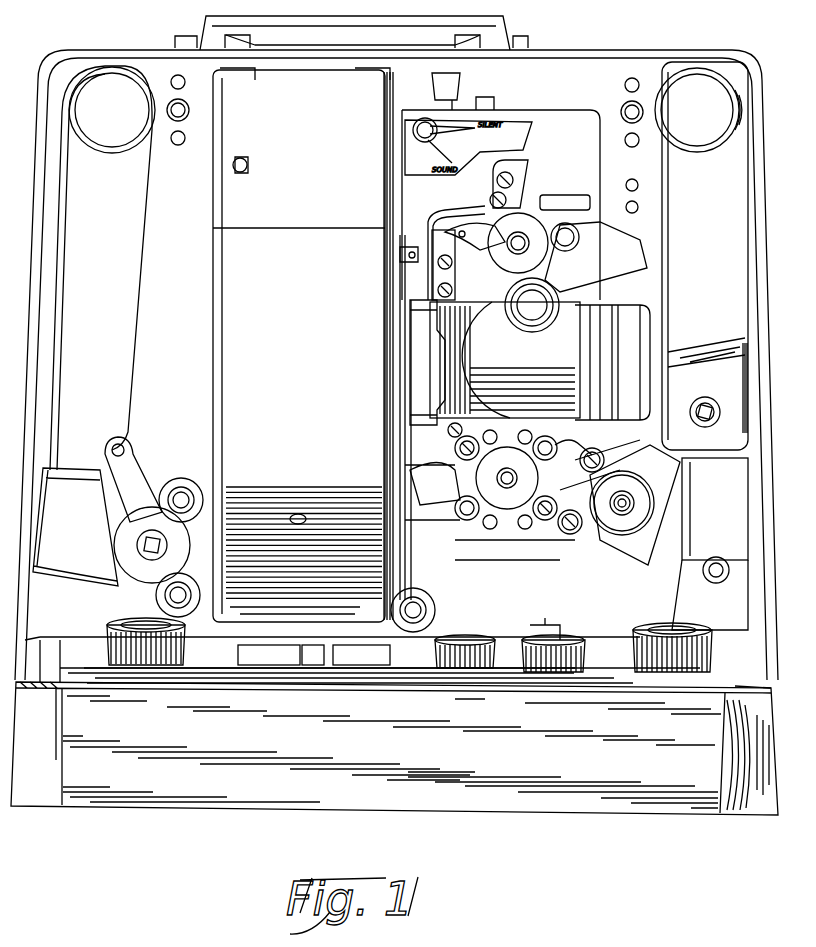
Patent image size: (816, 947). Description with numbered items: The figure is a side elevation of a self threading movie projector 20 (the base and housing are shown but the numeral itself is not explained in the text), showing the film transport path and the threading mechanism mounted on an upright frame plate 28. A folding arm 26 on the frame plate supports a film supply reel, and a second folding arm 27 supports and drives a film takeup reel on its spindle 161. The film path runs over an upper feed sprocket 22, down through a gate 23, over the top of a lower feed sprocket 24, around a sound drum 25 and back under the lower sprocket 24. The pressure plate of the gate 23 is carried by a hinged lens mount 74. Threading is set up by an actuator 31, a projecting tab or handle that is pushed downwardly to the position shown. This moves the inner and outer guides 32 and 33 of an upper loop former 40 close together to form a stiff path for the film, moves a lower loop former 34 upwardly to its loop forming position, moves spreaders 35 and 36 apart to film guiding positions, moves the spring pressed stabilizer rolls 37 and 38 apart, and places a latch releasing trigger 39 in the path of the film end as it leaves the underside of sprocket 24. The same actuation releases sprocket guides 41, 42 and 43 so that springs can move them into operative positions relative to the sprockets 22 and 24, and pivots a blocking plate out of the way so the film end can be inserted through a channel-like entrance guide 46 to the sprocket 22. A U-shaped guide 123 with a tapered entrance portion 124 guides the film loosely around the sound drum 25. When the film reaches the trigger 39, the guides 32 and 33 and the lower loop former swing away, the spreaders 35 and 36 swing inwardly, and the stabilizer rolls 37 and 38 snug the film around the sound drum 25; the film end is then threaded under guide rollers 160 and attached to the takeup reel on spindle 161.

The projector base 20 is at (180, 818).
The upper feed sprocket 22 is at (518, 225).
The gate 23 is at (422, 350).
The lower feed sprocket 24 is at (518, 502).
The sound drum 25 is at (633, 489).
The folding arm 26 is at (712, 231).
The folding arm 27 is at (105, 326).
The upright frame plate 28 is at (582, 72).
The actuator 31 is at (572, 196).
The inner guide 32 is at (442, 230).
The outer guide 33 is at (448, 214).
The lower loop former 34 is at (398, 471).
The spreader 35 is at (562, 442).
The spreader 36 is at (574, 510).
The stabilizer roll 37 is at (597, 462).
The stabilizer roll 38 is at (568, 530).
The latch releasing trigger 39 is at (420, 505).
The upper loop former 40 is at (436, 202).
The sprocket guide 41 is at (513, 205).
The sprocket guide 42 is at (472, 441).
The sprocket guide 43 is at (535, 516).
The entrance guide 46 is at (630, 270).
The lens mount 74 is at (548, 361).
The U-shaped guide 123 is at (640, 560).
The tapered entrance portion 124 is at (628, 488).
The guide rollers 160 is at (430, 611).
The spindle 161 is at (150, 556).